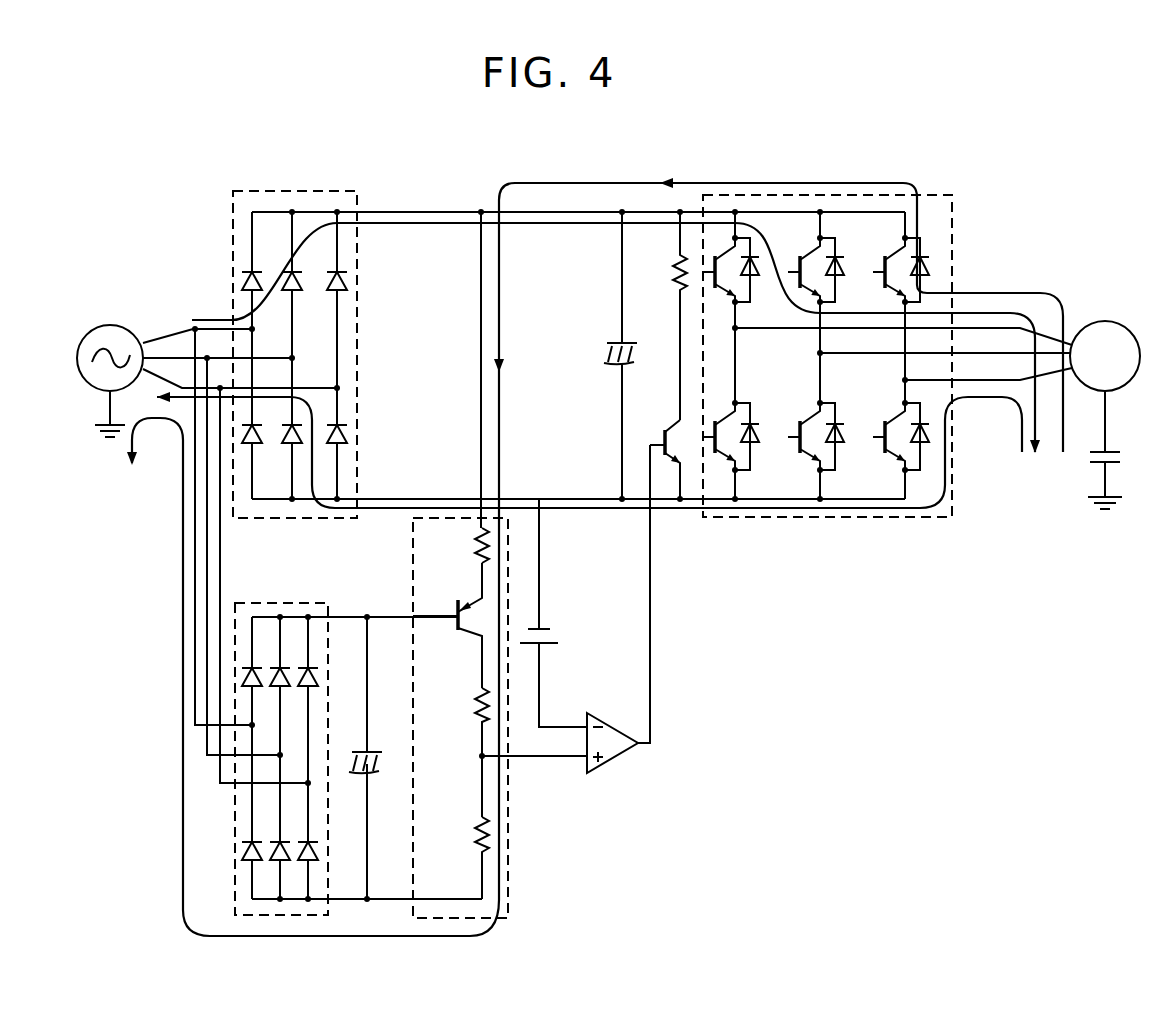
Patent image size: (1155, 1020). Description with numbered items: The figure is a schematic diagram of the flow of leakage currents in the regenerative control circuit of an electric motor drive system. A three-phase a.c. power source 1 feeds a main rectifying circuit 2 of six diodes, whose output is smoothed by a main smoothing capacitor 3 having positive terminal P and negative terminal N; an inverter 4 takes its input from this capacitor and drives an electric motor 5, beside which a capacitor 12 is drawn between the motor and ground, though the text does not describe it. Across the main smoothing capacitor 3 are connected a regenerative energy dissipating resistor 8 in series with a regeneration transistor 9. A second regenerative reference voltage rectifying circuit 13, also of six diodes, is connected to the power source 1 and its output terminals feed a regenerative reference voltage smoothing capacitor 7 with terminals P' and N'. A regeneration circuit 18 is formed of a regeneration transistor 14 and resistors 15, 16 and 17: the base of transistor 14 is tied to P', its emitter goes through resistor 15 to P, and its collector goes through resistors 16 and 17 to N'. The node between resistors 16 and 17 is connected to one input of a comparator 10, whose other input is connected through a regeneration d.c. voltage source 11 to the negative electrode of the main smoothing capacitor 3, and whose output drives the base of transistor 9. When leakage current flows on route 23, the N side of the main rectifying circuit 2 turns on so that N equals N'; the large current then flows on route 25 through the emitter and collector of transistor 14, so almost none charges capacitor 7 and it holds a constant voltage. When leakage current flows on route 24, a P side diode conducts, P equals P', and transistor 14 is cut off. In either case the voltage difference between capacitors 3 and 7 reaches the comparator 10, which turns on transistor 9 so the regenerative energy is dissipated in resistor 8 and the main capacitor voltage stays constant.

The 3-phase a.c. power source 1 is at (116, 322).
The main rectifying circuit 2 is at (232, 245).
The main smoothing capacitor 3 is at (605, 348).
The inverter 4 is at (833, 194).
The electric motor 5 is at (1103, 321).
The regenerative reference voltage smoothing capacitor 7 is at (378, 746).
The regenerative energy dissipating resistor 8 is at (672, 278).
The regeneration transistor 9 is at (663, 432).
The comparator 10 is at (598, 711).
The regeneration d.c. voltage source 11 is at (548, 628).
The capacitor 12 is at (1088, 460).
The regenerative reference voltage rectifying circuit 13 is at (285, 602).
The regeneration transistor 14 is at (455, 610).
The resistor 15 is at (474, 547).
The resistor 16 is at (474, 703).
The resistor 17 is at (474, 830).
The regeneration circuit 18 is at (512, 862).
The route 23 is at (395, 505).
The route 24 is at (418, 228).
The route 25 is at (503, 286).